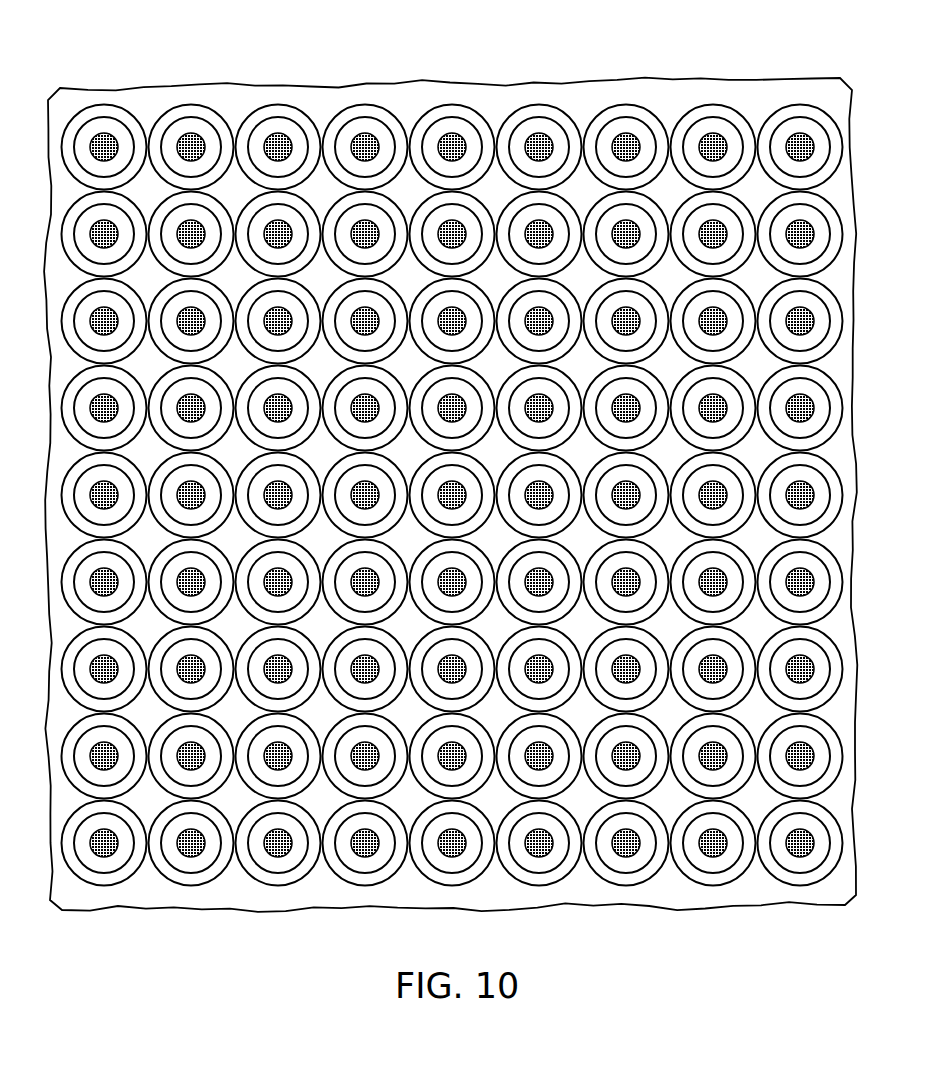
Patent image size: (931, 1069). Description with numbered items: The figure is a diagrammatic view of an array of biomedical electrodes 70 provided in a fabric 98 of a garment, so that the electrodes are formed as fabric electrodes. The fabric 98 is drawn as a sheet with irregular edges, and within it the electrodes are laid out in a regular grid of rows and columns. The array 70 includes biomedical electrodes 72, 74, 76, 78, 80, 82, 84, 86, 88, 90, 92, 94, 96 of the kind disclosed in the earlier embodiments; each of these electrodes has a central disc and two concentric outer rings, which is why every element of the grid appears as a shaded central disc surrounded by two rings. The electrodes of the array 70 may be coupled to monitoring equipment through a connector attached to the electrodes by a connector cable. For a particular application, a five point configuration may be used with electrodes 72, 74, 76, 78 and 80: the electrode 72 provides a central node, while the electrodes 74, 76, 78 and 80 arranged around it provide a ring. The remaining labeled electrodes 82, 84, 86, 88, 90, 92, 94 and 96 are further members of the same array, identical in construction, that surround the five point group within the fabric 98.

The array of biomedical electrodes 70 is at (450, 463).
The fabric 98 is at (411, 94).
The biomedical electrode 84 is at (418, 206).
The biomedical electrode 92 is at (325, 296).
The biomedical electrode 76 is at (418, 296).
The biomedical electrode 90 is at (578, 293).
The biomedical electrode 86 is at (242, 383).
The biomedical electrode 78 is at (327, 383).
The biomedical electrode 72 is at (413, 383).
The biomedical electrode 74 is at (579, 380).
The biomedical electrode 82 is at (663, 380).
The biomedical electrode 94 is at (327, 470).
The biomedical electrode 80 is at (413, 470).
The biomedical electrode 96 is at (579, 467).
The biomedical electrode 88 is at (413, 557).